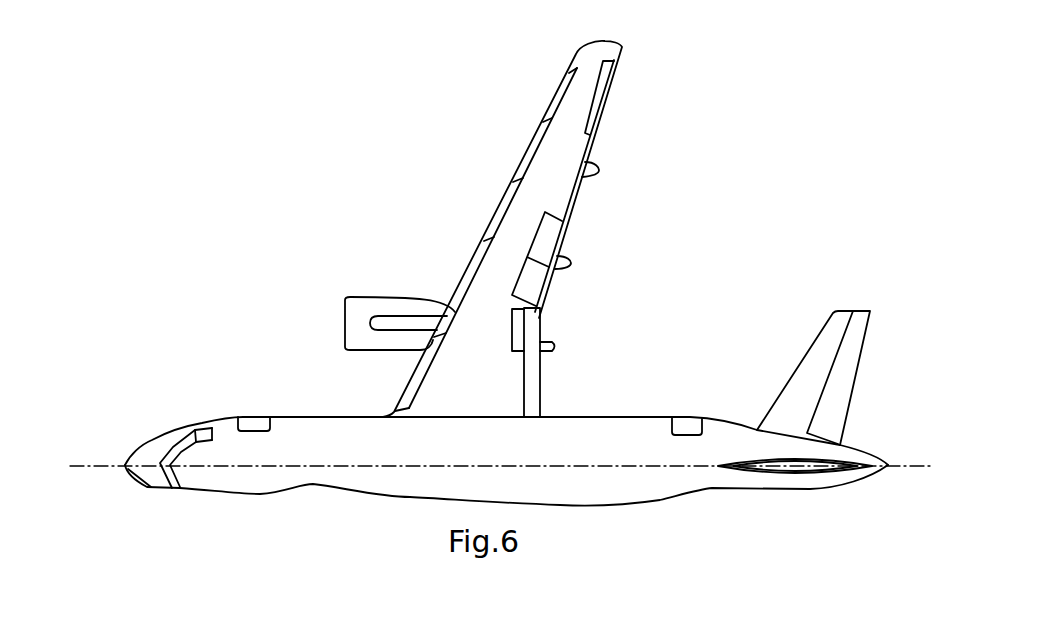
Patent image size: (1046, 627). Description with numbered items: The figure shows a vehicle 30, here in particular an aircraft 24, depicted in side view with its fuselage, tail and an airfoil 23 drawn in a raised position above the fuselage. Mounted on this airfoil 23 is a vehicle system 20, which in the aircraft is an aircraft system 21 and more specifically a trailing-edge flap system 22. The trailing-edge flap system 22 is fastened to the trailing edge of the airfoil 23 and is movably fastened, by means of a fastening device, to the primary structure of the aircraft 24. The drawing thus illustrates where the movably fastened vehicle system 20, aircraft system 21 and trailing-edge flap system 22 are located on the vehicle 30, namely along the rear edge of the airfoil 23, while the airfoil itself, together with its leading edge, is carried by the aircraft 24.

The vehicle system 20 is at (612, 222).
The aircraft system 21 is at (612, 172).
The trailing-edge flap system 22 is at (580, 224).
The airfoil 23 is at (503, 248).
The vehicle 30 is at (699, 182).
The aircraft 24 is at (771, 170).